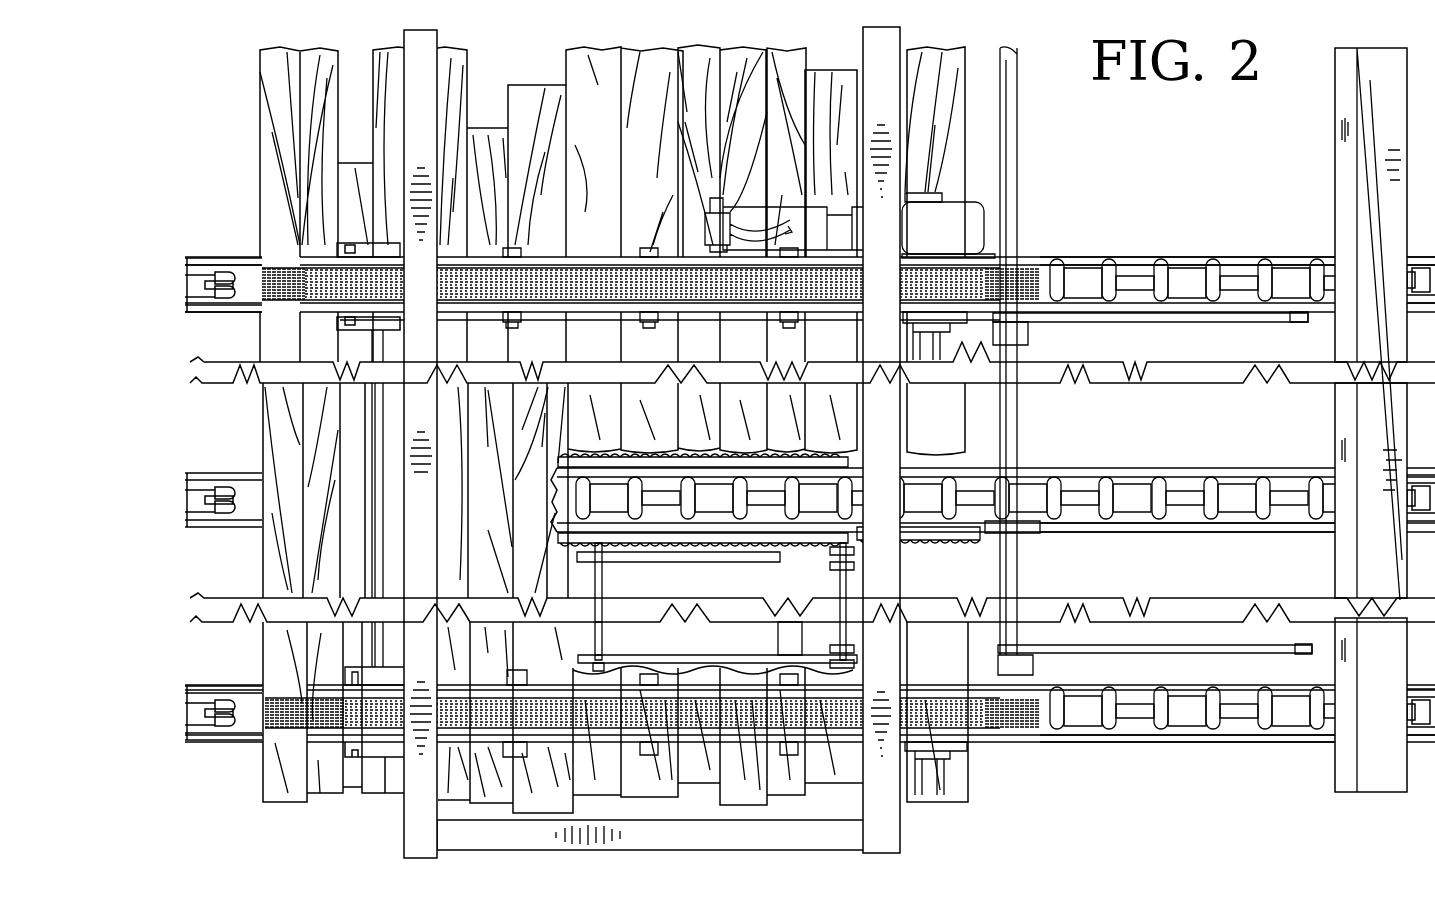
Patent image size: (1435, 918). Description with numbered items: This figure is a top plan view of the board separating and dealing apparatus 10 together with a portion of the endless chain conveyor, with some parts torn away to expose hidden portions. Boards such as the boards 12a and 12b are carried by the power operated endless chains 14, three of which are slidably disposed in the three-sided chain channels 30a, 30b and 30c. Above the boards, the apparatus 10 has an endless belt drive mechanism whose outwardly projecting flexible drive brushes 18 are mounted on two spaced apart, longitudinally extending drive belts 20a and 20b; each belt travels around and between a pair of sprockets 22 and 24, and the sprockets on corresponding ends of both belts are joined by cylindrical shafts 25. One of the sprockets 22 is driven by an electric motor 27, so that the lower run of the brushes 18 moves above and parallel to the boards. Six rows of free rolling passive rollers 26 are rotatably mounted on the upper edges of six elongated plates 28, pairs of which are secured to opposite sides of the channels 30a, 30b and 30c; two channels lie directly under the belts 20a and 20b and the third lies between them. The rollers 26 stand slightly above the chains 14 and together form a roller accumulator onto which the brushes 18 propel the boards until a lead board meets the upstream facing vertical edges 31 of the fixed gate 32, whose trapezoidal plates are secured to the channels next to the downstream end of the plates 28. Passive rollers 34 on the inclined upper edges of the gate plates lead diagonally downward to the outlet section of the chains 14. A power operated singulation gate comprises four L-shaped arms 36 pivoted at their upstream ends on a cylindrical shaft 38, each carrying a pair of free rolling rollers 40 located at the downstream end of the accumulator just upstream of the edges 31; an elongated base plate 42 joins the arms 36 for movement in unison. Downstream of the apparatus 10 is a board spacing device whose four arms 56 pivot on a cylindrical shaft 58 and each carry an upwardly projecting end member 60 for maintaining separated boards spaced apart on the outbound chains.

The apparatus 10 is at (1037, 743).
The board 12a is at (1368, 763).
The board 12b is at (940, 805).
The endless chains 14 is at (1277, 258).
The drive brushes 18 is at (1040, 282).
The drive belt 20a is at (762, 705).
The drive belt 20b is at (596, 283).
The sprocket 22 is at (968, 316).
The sprocket 24 is at (337, 318).
The shafts 25 is at (372, 480).
The rollers 26 is at (815, 457).
The electric motor 27 is at (1018, 230).
The elongated plates 28 is at (555, 525).
The chain channel 30a is at (1232, 742).
The chain channel 30b is at (1190, 524).
The chain channel 30c is at (1148, 258).
The vertical edges 31 is at (815, 549).
The fixed gate 32 is at (995, 527).
The rollers 34 is at (910, 548).
The arms 36 is at (633, 662).
The shaft 38 is at (595, 586).
The rollers 40 is at (870, 650).
The base plate 42 is at (780, 640).
The arms 56 is at (1208, 323).
The shaft 58 is at (1020, 420).
The end member 60 is at (1316, 323).